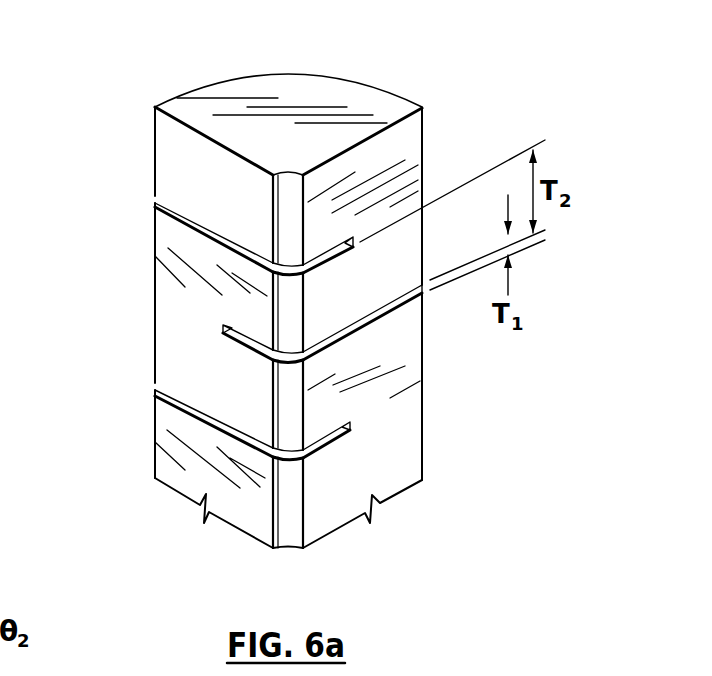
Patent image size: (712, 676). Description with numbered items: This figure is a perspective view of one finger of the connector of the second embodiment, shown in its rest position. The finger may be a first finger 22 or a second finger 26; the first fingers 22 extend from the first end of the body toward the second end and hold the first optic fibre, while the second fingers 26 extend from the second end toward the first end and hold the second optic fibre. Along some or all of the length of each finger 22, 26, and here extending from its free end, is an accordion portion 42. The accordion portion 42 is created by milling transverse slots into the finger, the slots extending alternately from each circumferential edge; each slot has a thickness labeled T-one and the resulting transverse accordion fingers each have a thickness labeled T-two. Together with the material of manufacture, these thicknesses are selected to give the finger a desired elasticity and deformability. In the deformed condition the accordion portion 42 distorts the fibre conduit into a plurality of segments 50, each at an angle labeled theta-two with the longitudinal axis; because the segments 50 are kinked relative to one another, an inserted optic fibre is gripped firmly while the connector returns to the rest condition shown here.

The first finger 22 is at (285, 146).
The second finger 26 is at (196, 108).
The accordion portion 42 is at (244, 292).
The segment 50 is at (292, 192).